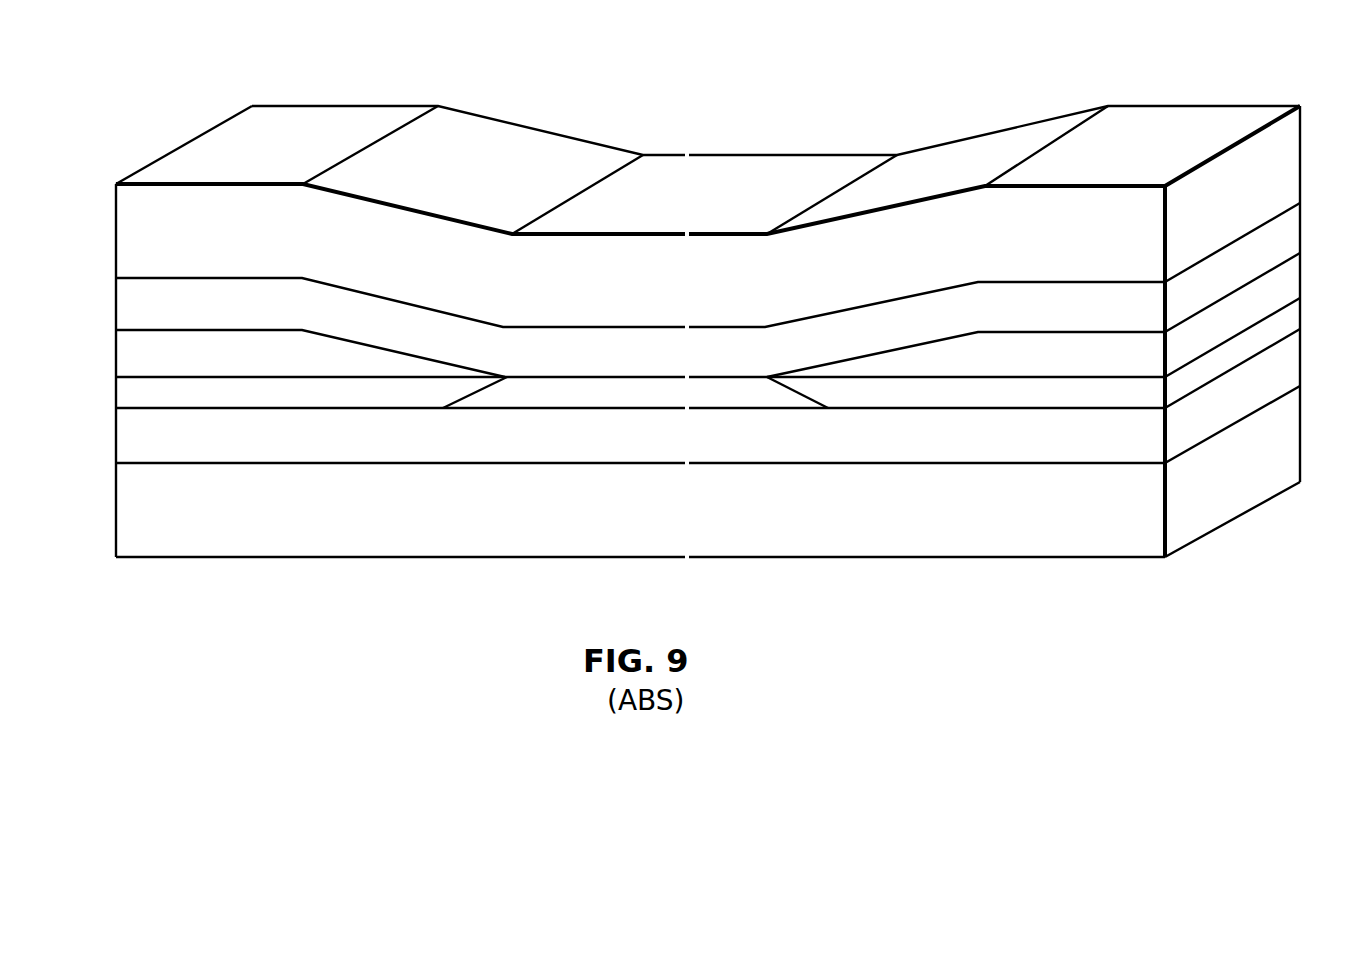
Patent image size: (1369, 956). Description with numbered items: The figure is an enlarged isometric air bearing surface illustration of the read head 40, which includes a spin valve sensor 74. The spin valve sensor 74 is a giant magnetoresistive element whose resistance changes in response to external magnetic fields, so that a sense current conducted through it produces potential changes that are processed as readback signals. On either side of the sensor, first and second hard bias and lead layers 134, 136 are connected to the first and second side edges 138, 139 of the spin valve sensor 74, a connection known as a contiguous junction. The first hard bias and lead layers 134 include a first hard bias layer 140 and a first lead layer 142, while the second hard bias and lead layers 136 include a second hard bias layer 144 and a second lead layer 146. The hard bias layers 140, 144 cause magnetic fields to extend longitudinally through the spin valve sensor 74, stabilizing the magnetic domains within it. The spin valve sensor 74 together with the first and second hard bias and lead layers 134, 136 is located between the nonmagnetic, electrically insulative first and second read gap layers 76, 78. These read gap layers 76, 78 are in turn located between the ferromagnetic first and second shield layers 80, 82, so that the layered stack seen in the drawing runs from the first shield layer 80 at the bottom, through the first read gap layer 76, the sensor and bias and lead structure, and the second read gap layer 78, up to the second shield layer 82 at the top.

The read head 40 is at (774, 120).
The spin valve sensor 74 is at (546, 365).
The first read gap layer 76 is at (502, 450).
The second read gap layer 78 is at (403, 318).
The first shield layer 80 is at (228, 535).
The second shield layer 82 is at (543, 152).
The first hard bias and lead layers 134 is at (105, 332).
The second hard bias and lead layers 136 is at (1304, 250).
The first side edge 138 is at (468, 395).
The second side edge 139 is at (805, 397).
The first hard bias layer 140 is at (143, 392).
The first lead layer 142 is at (148, 350).
The second hard bias layer 144 is at (1100, 392).
The second lead layer 146 is at (1106, 357).